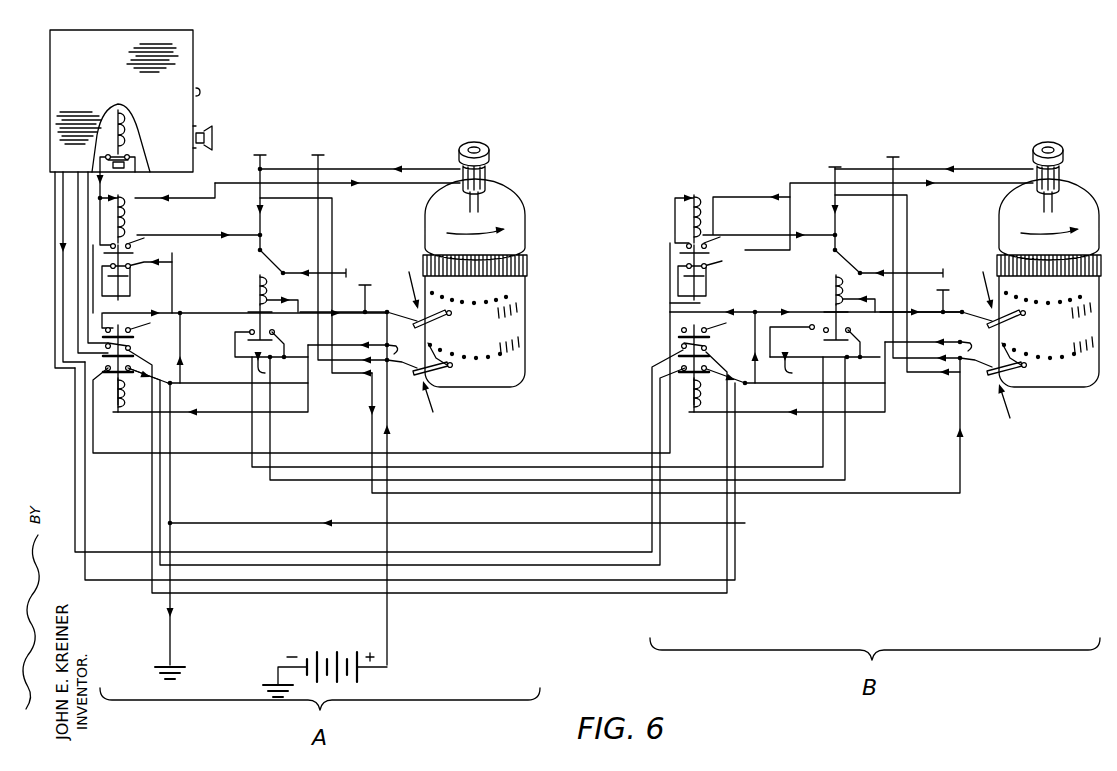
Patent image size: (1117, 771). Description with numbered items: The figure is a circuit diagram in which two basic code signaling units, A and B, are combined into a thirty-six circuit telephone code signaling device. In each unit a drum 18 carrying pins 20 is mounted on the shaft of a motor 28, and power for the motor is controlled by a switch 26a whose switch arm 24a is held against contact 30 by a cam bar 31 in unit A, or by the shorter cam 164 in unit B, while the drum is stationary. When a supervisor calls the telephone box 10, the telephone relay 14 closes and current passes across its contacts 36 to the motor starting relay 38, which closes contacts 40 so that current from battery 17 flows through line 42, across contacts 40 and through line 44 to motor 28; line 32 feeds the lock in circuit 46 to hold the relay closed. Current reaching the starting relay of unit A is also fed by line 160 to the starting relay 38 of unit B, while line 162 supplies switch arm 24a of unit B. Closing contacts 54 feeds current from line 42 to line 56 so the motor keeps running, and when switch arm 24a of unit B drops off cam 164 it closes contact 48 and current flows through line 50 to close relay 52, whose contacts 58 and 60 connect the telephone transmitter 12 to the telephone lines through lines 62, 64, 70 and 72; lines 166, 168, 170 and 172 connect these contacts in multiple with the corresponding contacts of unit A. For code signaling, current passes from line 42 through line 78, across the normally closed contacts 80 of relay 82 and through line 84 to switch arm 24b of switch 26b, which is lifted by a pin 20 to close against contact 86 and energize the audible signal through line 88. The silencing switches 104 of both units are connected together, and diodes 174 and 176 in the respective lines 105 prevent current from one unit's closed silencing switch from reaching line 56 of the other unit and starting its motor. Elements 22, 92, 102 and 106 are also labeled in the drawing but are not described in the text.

The telephone box 10 is at (50, 129).
The telephone transmitter 12 is at (212, 152).
The telephone relay 14 is at (152, 149).
The battery 17 is at (358, 652).
The drum 18 is at (521, 212).
The pin 20 is at (755, 326).
The contact pins 22 is at (795, 328).
The switch arm 24a is at (451, 368).
The switch arm 24b is at (448, 310).
The switch 26a is at (731, 410).
The switch 26b is at (693, 281).
The motor 28 is at (490, 162).
The contact 30 is at (400, 366).
The cam bar 31 is at (447, 345).
The line 32 is at (200, 198).
The pair of contacts 36 is at (114, 208).
The motor starting relay 38 is at (172, 270).
The pair of contacts 40 is at (716, 277).
The line 42 is at (160, 313).
The line 44 is at (392, 188).
The lock in circuit 46 is at (131, 243).
The contact 48 is at (652, 343).
The line 50 is at (499, 391).
The relay 52 is at (110, 408).
The contacts 54 is at (716, 340).
The line 56 is at (130, 283).
The contacts 58 is at (130, 343).
The contacts 60 is at (425, 387).
The line 62 is at (63, 271).
The line 64 is at (55, 224).
The line 70 is at (78, 300).
The line 72 is at (88, 330).
The line 78 is at (206, 313).
The normally closed contacts 80 is at (250, 318).
The relay 82 is at (252, 281).
The line 84 is at (631, 300).
The contact 86 is at (395, 334).
The line 88 is at (318, 220).
The terminal 92 is at (665, 296).
The conductor 102 is at (601, 216).
The silencing switch 104 is at (270, 360).
The line 105 is at (806, 334).
The contact 106 is at (584, 341).
The line 160 is at (513, 451).
The line 162 is at (903, 490).
The cam 164 is at (1012, 348).
The line 166 is at (508, 553).
The line 168 is at (588, 560).
The line 170 is at (713, 563).
The line 172 is at (662, 597).
The diode 174 is at (521, 409).
The diode 176 is at (804, 366).